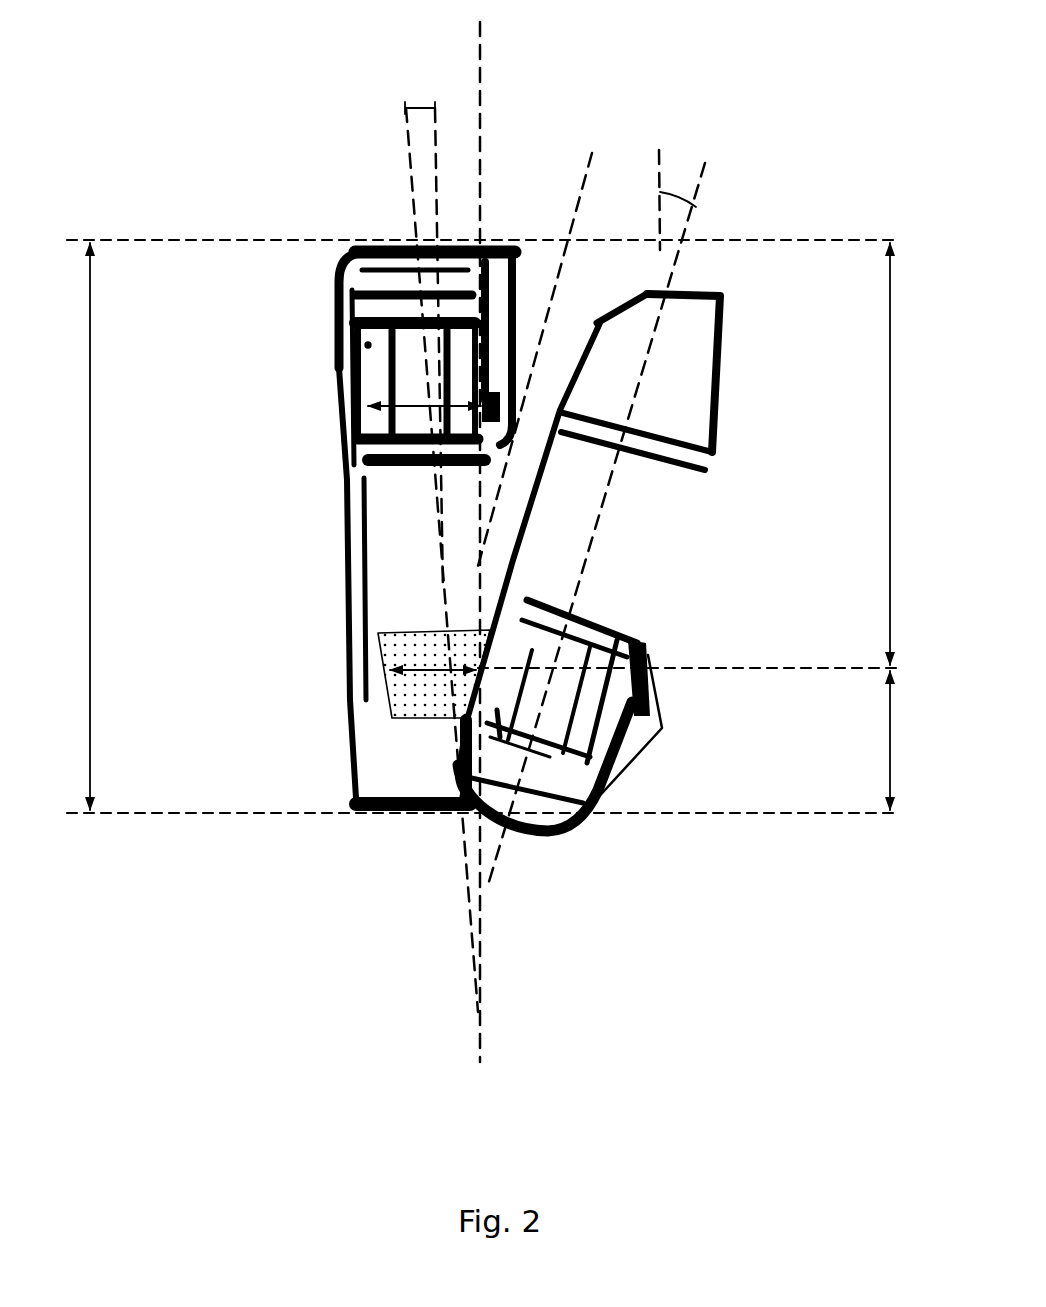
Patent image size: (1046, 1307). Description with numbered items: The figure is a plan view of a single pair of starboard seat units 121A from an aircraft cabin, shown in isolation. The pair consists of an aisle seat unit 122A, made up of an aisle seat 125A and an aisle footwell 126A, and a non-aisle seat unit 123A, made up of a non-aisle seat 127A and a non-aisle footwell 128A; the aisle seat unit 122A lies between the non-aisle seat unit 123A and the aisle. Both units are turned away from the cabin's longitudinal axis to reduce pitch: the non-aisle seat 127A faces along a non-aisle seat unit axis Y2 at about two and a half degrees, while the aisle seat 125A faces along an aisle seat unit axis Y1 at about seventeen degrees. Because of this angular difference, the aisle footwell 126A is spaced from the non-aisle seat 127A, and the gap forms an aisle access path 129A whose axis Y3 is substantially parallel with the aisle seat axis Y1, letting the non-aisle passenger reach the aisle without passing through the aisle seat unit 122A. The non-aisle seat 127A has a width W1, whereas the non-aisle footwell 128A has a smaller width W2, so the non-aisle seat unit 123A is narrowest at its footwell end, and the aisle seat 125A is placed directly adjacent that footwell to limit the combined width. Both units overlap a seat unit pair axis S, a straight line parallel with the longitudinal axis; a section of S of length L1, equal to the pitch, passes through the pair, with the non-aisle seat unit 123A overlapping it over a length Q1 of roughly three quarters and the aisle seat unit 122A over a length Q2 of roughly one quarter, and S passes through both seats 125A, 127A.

The pair of starboard seat units 121A is at (327, 855).
The aisle seat unit 122A is at (678, 782).
The non-aisle seat unit 123A is at (290, 556).
The aisle seat 125A is at (597, 700).
The aisle footwell 126A is at (680, 368).
The non-aisle seat 127A is at (380, 395).
The non-aisle footwell 128A is at (418, 690).
The aisle access path 129A is at (567, 338).
The seat unit pair axis S is at (482, 31).
The aisle seat unit axis Y1 is at (605, 531).
The non-aisle seat unit axis Y2 is at (446, 566).
The passenger access path axis Y3 is at (580, 200).
The length of section of seat unit pair axis L1 is at (69, 526).
The length of overlap of non-aisle seat unit Q1 is at (920, 454).
The length of overlap of aisle seat unit Q2 is at (920, 740).
The width of non-aisle seat W1 is at (415, 407).
The width of non-aisle footwell W2 is at (392, 668).